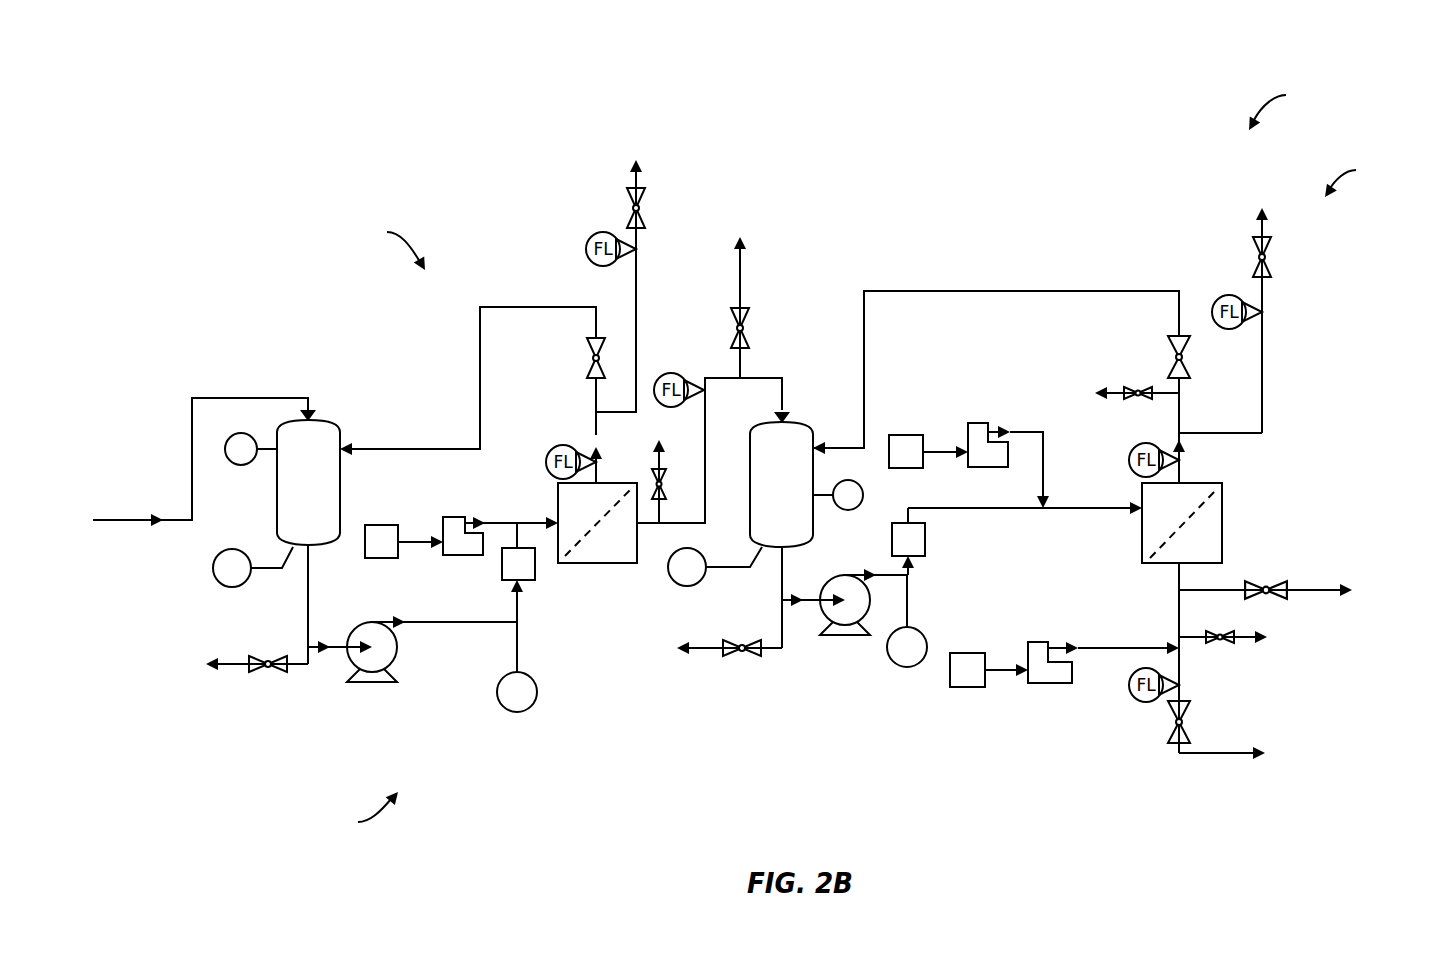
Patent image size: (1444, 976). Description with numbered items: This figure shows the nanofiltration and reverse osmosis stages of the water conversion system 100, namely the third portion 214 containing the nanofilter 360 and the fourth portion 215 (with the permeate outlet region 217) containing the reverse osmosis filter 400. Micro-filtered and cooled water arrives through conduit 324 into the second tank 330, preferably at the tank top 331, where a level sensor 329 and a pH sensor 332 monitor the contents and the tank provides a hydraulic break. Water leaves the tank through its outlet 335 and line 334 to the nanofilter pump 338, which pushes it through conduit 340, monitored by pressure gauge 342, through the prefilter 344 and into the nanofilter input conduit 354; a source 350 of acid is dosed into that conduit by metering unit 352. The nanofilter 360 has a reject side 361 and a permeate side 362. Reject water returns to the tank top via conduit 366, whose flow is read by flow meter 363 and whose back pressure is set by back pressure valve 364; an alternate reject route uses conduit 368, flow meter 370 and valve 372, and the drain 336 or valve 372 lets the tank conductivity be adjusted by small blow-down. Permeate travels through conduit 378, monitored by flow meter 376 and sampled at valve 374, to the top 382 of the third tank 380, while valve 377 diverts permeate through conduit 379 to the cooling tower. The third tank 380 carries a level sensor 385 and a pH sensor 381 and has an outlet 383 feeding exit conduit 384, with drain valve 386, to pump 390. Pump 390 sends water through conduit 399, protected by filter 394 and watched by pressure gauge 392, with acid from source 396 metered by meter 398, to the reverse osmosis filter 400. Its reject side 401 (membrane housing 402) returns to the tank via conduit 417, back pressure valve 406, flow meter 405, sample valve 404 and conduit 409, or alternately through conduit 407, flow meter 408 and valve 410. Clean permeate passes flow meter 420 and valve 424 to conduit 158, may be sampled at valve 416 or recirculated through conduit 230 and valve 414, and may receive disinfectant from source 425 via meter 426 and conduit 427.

The water conversion system 100 is at (361, 811).
The conduit 158 is at (1233, 756).
The third portion of system 214 is at (390, 247).
The fourth portion of system 215 is at (1285, 109).
The RO permeate outlet section 217 is at (1358, 180).
The conduit 230 is at (1322, 592).
The conduit 324 is at (102, 523).
The level sensor 329 is at (245, 466).
The second tank 330 is at (308, 482).
The top of second tank 331 is at (322, 420).
The pH sensor 332 is at (213, 574).
The line 334 is at (308, 590).
The NF tank outlet 335 is at (327, 547).
The drain 336 is at (290, 666).
The nanofilter pump 338 is at (393, 657).
The conduit 340 is at (453, 624).
The pressure gauge 342 is at (519, 712).
The prefilter 344 is at (502, 573).
The source of acid 350 is at (383, 523).
The metering unit 352 is at (455, 516).
The nanofilter input conduit 354 is at (531, 521).
The nanofilter 360 is at (595, 553).
The reject side 361 is at (597, 523).
The permeate side 362 is at (567, 582).
The flow meter 363 is at (556, 447).
The back pressure valve 364 is at (587, 365).
The conduit 366 is at (418, 447).
The conduit 368 is at (636, 268).
The flow meter 370 is at (586, 246).
The valve 372 is at (628, 200).
The valve 374 is at (652, 478).
The flow meter 376 is at (676, 373).
The valve 377 is at (750, 321).
The conduit 378 is at (766, 378).
The conduit 379 is at (742, 267).
The third tank 380 is at (781, 484).
The pH sensor 381 is at (689, 586).
The top of third tank 382 is at (800, 423).
The RO tank outlet 383 is at (775, 547).
The conduit 384 is at (788, 572).
The level sensor 385 is at (863, 492).
The drain valve 386 is at (762, 652).
The pump 390 is at (848, 618).
The pressure gauge 392 is at (922, 636).
The filter 394 is at (925, 538).
The additive source A 396 is at (908, 433).
The meter 398 is at (983, 423).
The conduit 399 is at (1078, 510).
The reverse osmosis filter 400 is at (1192, 537).
The reject or concentrate side 401 is at (1182, 523).
The RO membrane housing 402 is at (1162, 563).
The valve 404 is at (1132, 400).
The flow meter 405 is at (1130, 462).
The back pressure valve 406 is at (1168, 348).
The conduit 407 is at (1262, 404).
The flow meter 408 is at (1228, 295).
The conduit 409 is at (1052, 290).
The valve 410 is at (1270, 268).
The valve 414 is at (1262, 582).
The valve 416 is at (1228, 642).
The conduit 417 is at (1180, 430).
The flow meter 420 is at (1147, 702).
The valve 424 is at (1188, 732).
The source of disinfectant 425 is at (963, 688).
The meter 426 is at (1048, 684).
The conduit 427 is at (1103, 647).